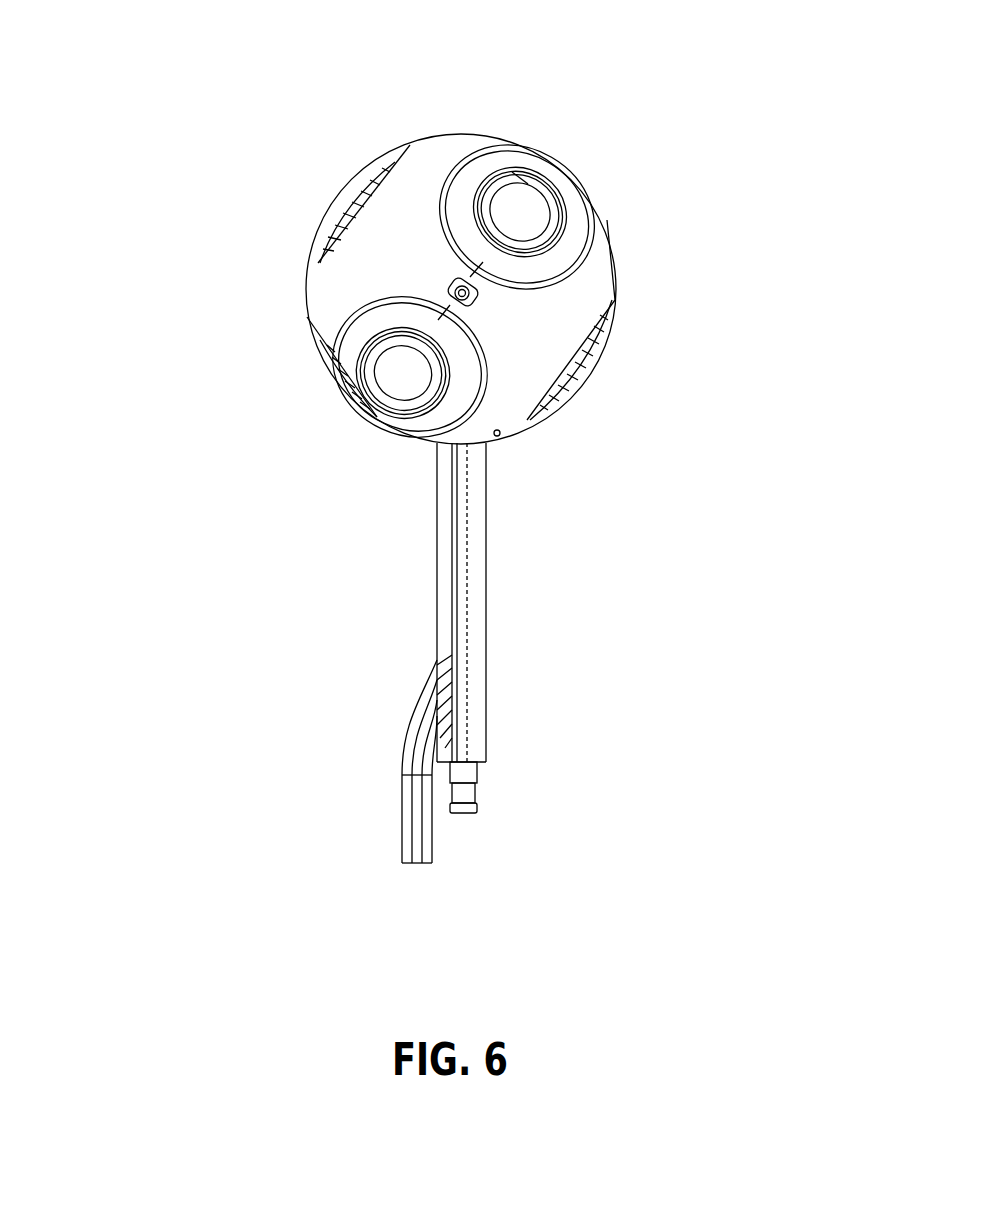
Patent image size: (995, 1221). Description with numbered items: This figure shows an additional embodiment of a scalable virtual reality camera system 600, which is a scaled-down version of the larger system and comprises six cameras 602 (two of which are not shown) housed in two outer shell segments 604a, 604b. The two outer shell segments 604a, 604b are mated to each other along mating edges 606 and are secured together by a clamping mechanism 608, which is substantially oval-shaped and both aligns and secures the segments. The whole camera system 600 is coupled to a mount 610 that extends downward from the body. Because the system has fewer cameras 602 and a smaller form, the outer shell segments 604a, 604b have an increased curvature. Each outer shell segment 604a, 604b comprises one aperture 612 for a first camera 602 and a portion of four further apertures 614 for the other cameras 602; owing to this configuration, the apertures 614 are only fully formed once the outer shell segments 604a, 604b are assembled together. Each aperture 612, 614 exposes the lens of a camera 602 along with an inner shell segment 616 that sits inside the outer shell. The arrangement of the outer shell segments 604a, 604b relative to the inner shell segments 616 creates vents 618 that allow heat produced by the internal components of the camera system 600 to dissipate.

The camera system 600 is at (122, 84).
The camera 602 is at (535, 183).
The outer shell segment 604a is at (427, 160).
The outer shell segment 604b is at (507, 421).
The mating edge 606 is at (455, 303).
The clamping mechanism 608 is at (432, 282).
The mount 610 is at (473, 587).
The aperture 612 is at (572, 357).
The aperture 614 is at (558, 278).
The inner shell segment 616 is at (588, 217).
The vent 618 is at (520, 170).